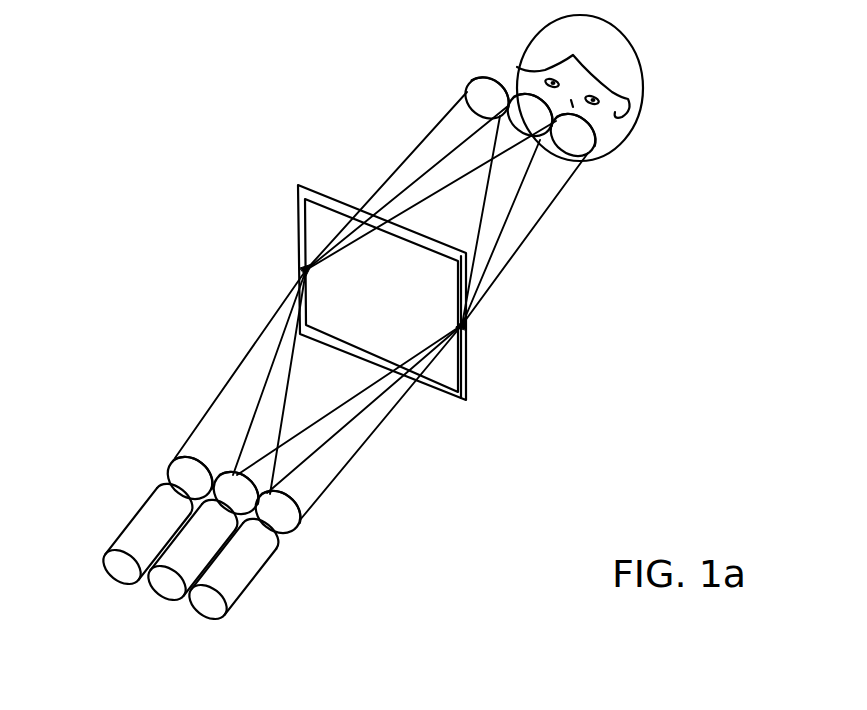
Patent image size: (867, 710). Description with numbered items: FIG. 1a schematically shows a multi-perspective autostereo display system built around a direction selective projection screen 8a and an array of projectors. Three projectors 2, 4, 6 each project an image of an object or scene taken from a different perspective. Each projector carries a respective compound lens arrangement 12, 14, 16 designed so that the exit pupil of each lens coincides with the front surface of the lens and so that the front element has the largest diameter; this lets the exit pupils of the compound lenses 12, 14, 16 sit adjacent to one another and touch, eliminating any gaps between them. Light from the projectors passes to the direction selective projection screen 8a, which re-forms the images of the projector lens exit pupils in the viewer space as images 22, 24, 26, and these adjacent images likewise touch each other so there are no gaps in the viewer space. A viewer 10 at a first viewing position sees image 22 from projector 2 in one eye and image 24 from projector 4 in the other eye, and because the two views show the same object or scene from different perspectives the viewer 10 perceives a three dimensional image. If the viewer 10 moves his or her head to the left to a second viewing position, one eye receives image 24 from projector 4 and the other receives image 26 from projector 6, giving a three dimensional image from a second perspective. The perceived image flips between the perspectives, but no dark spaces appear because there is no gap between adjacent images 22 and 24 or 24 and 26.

The projector 2 is at (130, 523).
The projector 4 is at (165, 585).
The projector 6 is at (250, 583).
The direction selective projection screen 8a is at (468, 355).
The viewer 10 is at (637, 53).
The compound lens arrangement 12 is at (176, 467).
The compound lens arrangement 14 is at (237, 476).
The compound lens arrangement 16 is at (290, 522).
The image 22 is at (578, 137).
The image 24 is at (526, 100).
The image 26 is at (475, 87).